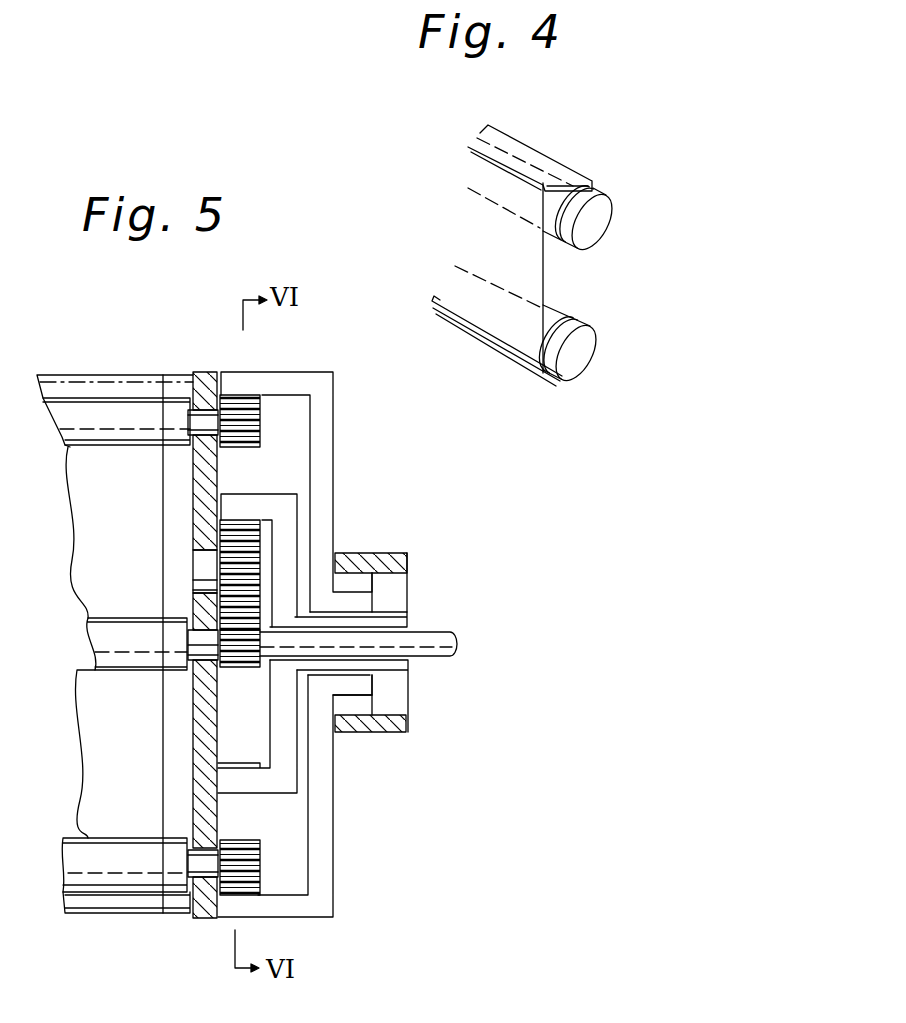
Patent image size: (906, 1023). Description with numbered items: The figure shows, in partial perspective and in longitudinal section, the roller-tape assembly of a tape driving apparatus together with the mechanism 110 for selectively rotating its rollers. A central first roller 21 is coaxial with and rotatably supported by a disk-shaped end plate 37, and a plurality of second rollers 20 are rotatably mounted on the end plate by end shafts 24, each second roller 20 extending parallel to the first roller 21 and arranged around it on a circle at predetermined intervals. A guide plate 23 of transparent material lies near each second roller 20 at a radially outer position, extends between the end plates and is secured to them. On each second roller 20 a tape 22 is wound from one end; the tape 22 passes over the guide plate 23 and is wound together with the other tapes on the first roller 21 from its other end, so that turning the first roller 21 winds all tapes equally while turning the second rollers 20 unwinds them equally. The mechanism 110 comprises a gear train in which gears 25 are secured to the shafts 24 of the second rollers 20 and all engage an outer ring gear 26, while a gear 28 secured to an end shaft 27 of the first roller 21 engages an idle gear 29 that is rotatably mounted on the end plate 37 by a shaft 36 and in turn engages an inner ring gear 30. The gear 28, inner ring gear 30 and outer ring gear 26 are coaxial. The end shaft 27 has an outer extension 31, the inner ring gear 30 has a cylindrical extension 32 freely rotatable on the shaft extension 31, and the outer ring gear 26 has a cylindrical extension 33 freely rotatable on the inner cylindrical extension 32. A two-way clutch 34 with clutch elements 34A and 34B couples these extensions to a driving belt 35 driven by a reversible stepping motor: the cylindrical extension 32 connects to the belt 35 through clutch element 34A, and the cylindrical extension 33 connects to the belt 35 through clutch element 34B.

In FIG. 4, the second roller 20 is at (602, 228).
In FIG. 5, the second roller 20 is at (174, 404).
In FIG. 4, the first roller 21 is at (583, 355).
In FIG. 5, the first roller 21 is at (97, 640).
In FIG. 4, the tape 22 is at (544, 286).
In FIG. 5, the tape 22 is at (76, 560).
In FIG. 4, the guide plate 23 is at (578, 166).
In FIG. 5, the guide plate 23 is at (86, 373).
In FIG. 5, the end shaft 24 is at (210, 410).
In FIG. 5, the gear 25 is at (262, 434).
In FIG. 5, the outer ring gear 26 is at (306, 372).
In FIG. 5, the end shaft 27 is at (207, 722).
In FIG. 5, the gear 28 is at (244, 670).
In FIG. 5, the idle gear 29 is at (262, 550).
In FIG. 5, the inner ring gear 30 is at (262, 502).
In FIG. 5, the outer extension 31 is at (458, 641).
In FIG. 5, the cylindrical extension 32 is at (404, 620).
In FIG. 5, the cylindrical extension 33 is at (350, 688).
In FIG. 5, the two-way clutch 34 is at (430, 570).
In FIG. 5, the clutch element 34A is at (412, 690).
In FIG. 5, the clutch element 34B is at (363, 705).
In FIG. 5, the driving belt 35 is at (392, 556).
In FIG. 5, the shaft 36 is at (205, 572).
In FIG. 5, the end plate 37 is at (193, 802).
In FIG. 5, the mechanism 110 is at (360, 384).